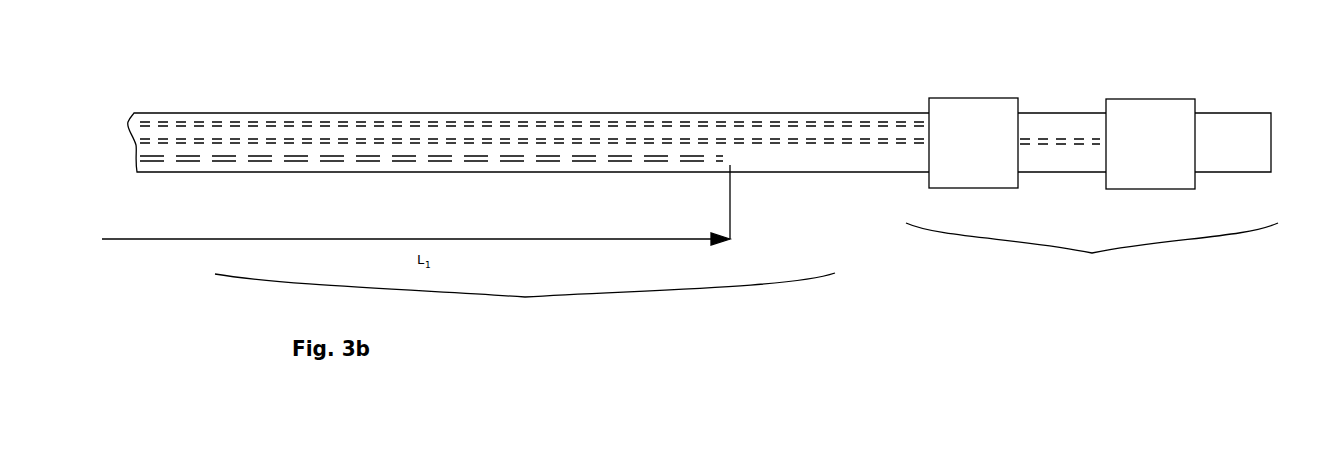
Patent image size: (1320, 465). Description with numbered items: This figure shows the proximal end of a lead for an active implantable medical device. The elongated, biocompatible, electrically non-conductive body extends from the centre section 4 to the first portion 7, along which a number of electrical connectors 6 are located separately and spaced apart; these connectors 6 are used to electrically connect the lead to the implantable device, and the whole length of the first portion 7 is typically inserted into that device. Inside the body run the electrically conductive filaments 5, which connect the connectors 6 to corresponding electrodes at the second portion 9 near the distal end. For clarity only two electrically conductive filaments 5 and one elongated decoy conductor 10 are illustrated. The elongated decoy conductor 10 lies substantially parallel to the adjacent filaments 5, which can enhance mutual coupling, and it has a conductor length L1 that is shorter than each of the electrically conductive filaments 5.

The centre section 4 is at (296, 116).
The electrically conductive filaments 5 is at (704, 126).
The electrical connectors 6 is at (951, 112).
The first portion 7 is at (1098, 268).
The second portion 9 is at (526, 300).
The elongated decoy conductor 10 is at (358, 155).